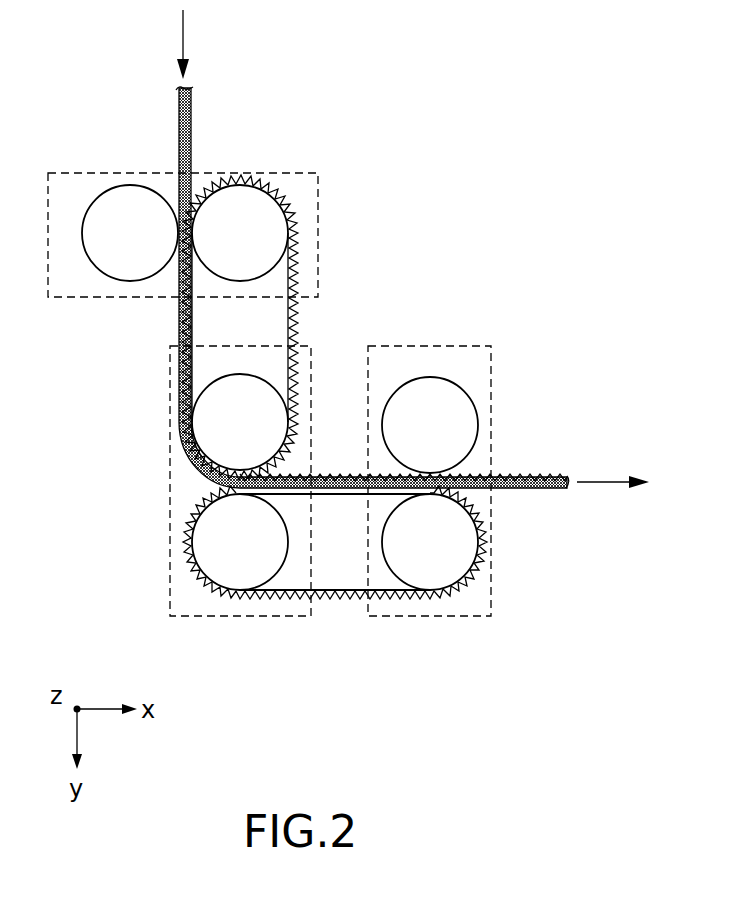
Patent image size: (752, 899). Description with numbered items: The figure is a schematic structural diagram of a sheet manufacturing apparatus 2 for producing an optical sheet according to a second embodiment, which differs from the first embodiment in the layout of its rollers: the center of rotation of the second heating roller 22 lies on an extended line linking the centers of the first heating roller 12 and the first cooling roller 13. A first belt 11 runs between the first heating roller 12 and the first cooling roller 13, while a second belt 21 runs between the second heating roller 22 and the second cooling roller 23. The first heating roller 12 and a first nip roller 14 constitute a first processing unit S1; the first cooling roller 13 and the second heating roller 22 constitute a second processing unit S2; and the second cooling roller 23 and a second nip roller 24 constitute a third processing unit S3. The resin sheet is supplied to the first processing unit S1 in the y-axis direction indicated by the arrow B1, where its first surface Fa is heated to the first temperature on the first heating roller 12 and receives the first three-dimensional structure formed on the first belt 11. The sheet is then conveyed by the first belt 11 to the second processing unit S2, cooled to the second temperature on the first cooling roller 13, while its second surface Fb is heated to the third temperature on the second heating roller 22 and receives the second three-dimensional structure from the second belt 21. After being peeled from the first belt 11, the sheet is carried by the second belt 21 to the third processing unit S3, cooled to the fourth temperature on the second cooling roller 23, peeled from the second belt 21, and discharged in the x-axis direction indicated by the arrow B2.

The sheet manufacturing apparatus 2 is at (430, 153).
The first belt 11 is at (293, 316).
The first heating roller 12 is at (275, 228).
The first cooling roller 13 is at (265, 422).
The first nip roller 14 is at (120, 267).
The second belt 21 is at (340, 593).
The second heating roller 22 is at (240, 578).
The second cooling roller 23 is at (432, 578).
The second nip roller 24 is at (430, 396).
The first surface Fa is at (190, 132).
The second surface Fb is at (178, 420).
The first processing unit S1 is at (73, 170).
The second processing unit S2 is at (170, 550).
The third processing unit S3 is at (492, 585).
The arrow B1 is at (201, 44).
The arrow B2 is at (613, 466).